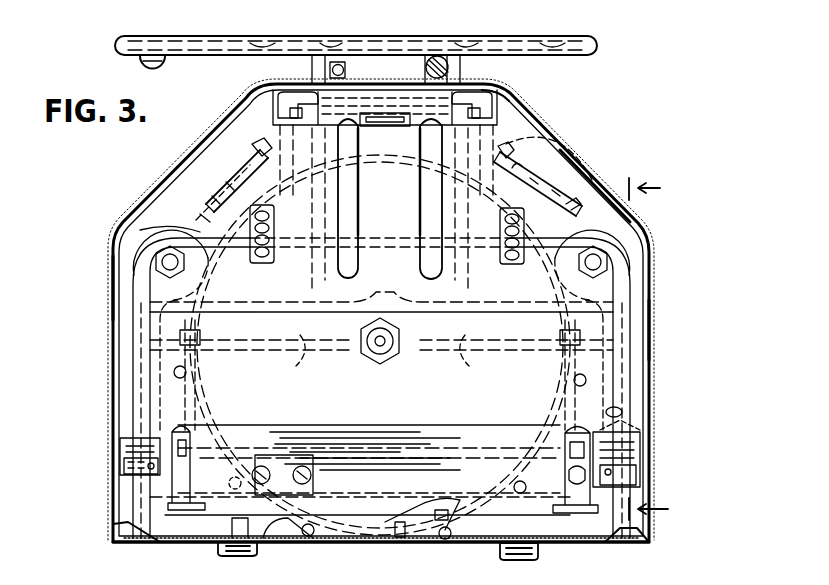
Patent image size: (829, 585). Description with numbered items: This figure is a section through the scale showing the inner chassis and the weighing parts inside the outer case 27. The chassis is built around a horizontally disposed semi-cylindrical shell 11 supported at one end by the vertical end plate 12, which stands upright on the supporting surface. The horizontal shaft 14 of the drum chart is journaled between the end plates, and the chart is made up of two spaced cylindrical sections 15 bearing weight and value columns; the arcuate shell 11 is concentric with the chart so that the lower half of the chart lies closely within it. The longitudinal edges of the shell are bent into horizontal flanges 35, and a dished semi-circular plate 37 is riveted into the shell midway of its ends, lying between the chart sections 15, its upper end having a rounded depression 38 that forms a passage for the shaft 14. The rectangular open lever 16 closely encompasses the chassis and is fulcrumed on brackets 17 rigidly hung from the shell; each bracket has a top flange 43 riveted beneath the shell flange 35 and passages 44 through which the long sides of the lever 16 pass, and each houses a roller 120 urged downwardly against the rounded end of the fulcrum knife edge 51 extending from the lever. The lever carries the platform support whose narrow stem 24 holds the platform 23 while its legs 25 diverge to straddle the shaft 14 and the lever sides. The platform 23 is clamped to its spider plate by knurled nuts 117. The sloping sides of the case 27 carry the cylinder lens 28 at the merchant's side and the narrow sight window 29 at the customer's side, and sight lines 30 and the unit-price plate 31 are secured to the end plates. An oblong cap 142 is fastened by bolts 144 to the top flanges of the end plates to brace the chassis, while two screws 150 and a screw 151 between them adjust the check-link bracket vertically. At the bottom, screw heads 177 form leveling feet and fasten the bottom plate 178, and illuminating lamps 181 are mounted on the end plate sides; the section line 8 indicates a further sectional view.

The semi-cylindrical shell 11 is at (478, 540).
The end plate 12 is at (480, 146).
The horizontal shaft 14 is at (380, 340).
The cylindrical chart section 15 is at (372, 161).
The lever 16 is at (340, 427).
The fulcrum bracket 17 is at (135, 448).
The platform 23 is at (596, 50).
The stem 24 is at (336, 152).
The legs 25 is at (134, 306).
The outer case 27 is at (113, 246).
The cylinder lens 28 is at (516, 164).
The sight window 29 is at (224, 186).
The sight line 30 is at (272, 215).
The plate 31 is at (572, 206).
The horizontal flange 35 is at (250, 319).
The dished semi-circular plate 37 is at (300, 356).
The rounded depression 38 is at (390, 353).
The horizontal flange 43 is at (667, 330).
The passage 44 is at (614, 434).
The fulcrum knife edge 51 is at (174, 478).
The section line 8- 8 is at (640, 348).
The knurled nut 117 is at (166, 61).
The roller 120 is at (128, 430).
The oblong cap 142 is at (284, 106).
The bolt 144 is at (502, 91).
The screw 150 is at (302, 82).
The screw 151 is at (424, 80).
The screw head 177 is at (222, 553).
The bottom plate 178 is at (150, 544).
The illuminating lamp 181 is at (150, 236).